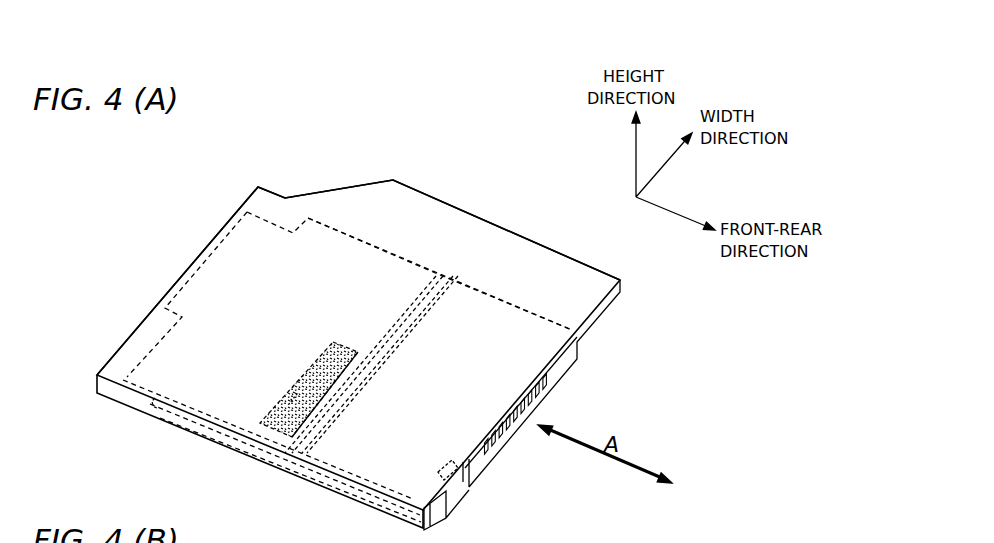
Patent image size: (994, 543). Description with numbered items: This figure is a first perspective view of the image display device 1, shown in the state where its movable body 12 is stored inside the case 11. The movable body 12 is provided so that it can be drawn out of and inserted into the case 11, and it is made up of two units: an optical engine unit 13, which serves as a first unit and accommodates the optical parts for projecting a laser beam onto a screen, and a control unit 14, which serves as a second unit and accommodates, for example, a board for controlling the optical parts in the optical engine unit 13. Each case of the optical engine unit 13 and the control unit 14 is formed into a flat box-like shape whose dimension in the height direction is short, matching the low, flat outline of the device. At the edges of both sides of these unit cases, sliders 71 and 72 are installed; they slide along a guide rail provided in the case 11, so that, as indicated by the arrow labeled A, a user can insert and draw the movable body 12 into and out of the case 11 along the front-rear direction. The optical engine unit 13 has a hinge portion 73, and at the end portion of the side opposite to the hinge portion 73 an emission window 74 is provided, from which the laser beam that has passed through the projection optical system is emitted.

The image display device 1 is at (247, 188).
The case 11 is at (352, 186).
The movable body 12 is at (552, 212).
The optical engine unit 13 is at (502, 300).
The control unit 14 is at (407, 260).
The slider 71 is at (348, 489).
The slider 72 is at (208, 428).
The hinge portion 73 is at (396, 335).
The emission window 74 is at (455, 488).